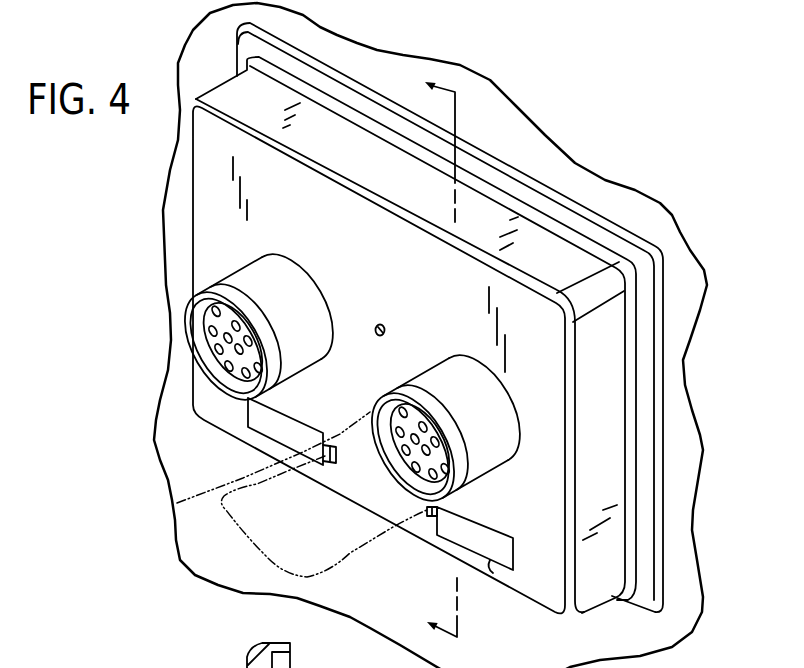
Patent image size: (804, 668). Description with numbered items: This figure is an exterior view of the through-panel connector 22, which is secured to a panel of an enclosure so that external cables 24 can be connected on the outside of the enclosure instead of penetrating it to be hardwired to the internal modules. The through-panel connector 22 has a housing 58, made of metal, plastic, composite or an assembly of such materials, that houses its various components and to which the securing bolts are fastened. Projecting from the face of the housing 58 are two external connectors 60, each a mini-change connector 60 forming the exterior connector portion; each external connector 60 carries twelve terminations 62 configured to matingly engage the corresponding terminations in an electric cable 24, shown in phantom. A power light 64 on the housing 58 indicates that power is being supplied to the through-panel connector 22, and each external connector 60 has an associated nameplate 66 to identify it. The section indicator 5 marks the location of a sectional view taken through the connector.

The section view line 5 is at (451, 370).
The through-panel connector 22 is at (591, 185).
The external cables 24 is at (177, 504).
The housing 58 is at (588, 385).
The external connector 60 is at (227, 288).
The terminations 62 is at (226, 370).
The power light 64 is at (379, 325).
The nameplate 66 is at (267, 438).